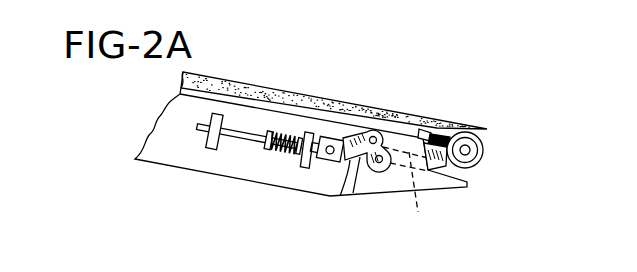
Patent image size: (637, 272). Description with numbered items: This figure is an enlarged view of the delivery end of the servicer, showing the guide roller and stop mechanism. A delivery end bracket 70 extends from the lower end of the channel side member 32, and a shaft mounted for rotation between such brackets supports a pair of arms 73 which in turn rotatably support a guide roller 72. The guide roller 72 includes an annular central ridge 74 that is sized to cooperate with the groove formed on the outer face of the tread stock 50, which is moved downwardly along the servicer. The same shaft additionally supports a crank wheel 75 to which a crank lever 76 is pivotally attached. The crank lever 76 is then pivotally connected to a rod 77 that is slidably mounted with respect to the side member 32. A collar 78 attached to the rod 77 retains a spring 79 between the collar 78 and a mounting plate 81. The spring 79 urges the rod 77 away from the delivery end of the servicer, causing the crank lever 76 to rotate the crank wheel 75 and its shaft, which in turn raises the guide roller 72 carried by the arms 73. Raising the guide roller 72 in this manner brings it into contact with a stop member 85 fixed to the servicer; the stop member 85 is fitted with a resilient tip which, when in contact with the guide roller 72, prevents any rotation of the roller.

The channel side member 32 is at (246, 179).
The tread stock 50 is at (315, 98).
The delivery end bracket 70 is at (367, 184).
The guide roller 72 is at (477, 150).
The arm 73 is at (418, 188).
The annular central ridge 74 is at (481, 163).
The crank wheel 75 is at (380, 172).
The crank lever 76 is at (340, 196).
The rod 77 is at (238, 138).
The collar 78 is at (273, 145).
The spring 79 is at (290, 150).
The mounting plate 81 is at (303, 172).
The stop member 85 is at (433, 129).